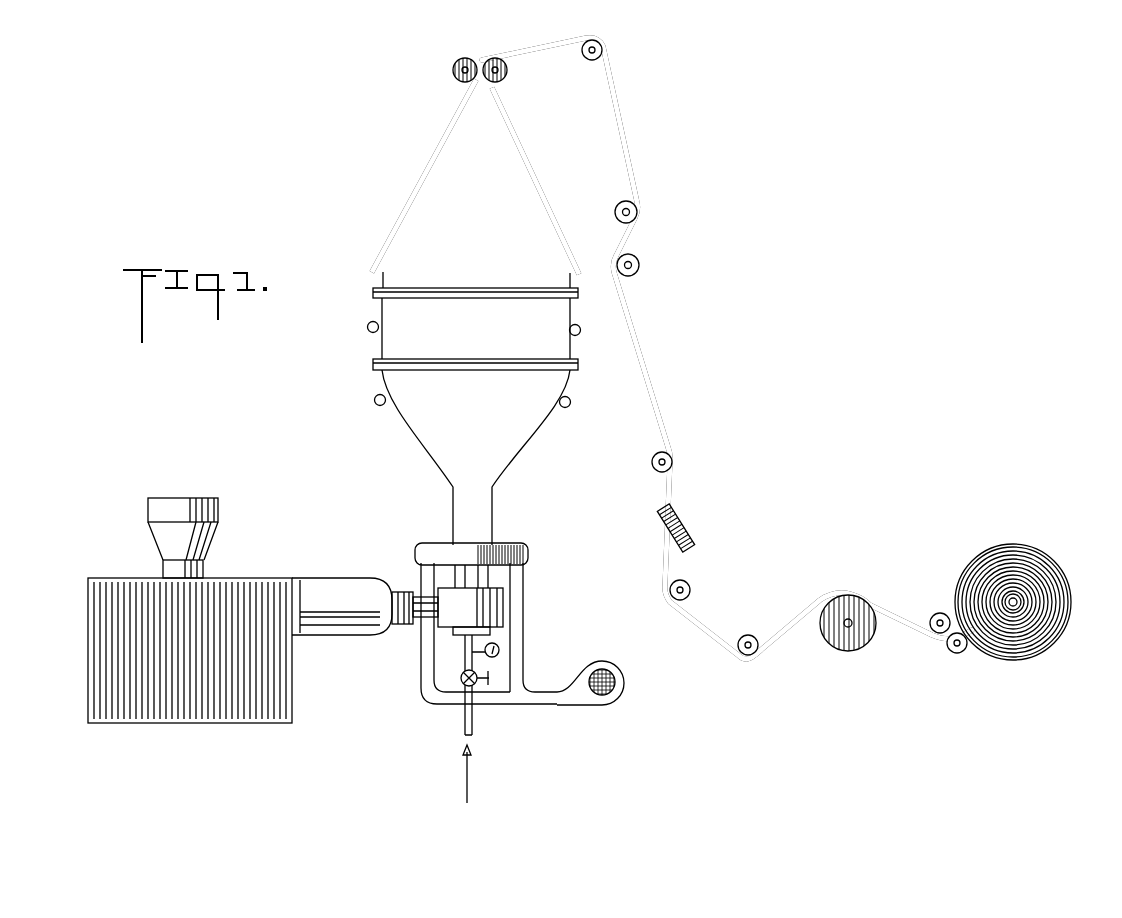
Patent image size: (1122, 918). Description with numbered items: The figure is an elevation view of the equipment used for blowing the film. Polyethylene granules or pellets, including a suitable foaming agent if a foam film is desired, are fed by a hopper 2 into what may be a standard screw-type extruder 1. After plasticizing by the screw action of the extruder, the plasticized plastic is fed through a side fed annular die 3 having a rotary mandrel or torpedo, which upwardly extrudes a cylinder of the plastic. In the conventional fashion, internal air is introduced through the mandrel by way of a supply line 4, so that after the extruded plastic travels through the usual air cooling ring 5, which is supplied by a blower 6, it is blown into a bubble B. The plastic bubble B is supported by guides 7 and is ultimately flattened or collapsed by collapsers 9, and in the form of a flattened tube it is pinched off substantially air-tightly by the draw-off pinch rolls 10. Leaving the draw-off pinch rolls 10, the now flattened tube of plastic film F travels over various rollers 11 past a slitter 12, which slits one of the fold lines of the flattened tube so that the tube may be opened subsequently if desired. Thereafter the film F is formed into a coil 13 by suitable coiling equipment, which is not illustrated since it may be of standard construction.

The screw-type extruder 1 is at (343, 580).
The hopper 2 is at (218, 512).
The side fed annular die 3 is at (500, 605).
The supply line 4 is at (473, 725).
The air cooling ring 5 is at (523, 546).
The blower 6 is at (628, 673).
The guides 7 is at (371, 334).
The collapsers 9 is at (528, 167).
The draw-off pinch rolls 10 is at (452, 68).
The rollers 11 is at (592, 61).
The slitter 12 is at (692, 535).
The coil 13 is at (1053, 582).
The bubble B is at (570, 348).
The plastic film F is at (662, 410).